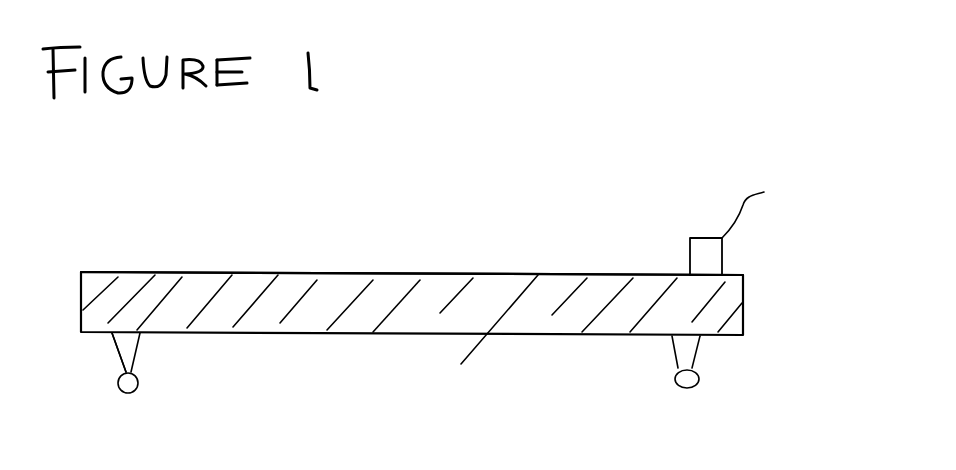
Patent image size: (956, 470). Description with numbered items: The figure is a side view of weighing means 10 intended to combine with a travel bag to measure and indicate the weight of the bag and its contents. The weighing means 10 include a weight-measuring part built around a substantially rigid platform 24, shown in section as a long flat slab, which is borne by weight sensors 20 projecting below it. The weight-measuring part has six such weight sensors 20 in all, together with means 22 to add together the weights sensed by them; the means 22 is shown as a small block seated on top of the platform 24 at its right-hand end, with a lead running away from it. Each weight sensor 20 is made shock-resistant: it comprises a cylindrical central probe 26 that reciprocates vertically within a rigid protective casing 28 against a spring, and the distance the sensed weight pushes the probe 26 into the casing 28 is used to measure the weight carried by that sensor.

The weighing means 10 is at (735, 305).
The weight sensor 20 is at (140, 340).
The means to add together the weights 22 is at (691, 250).
The substantially rigid platform 24 is at (253, 272).
The cylindrical central probe 26 is at (134, 392).
The rigid protective casing 28 is at (123, 350).